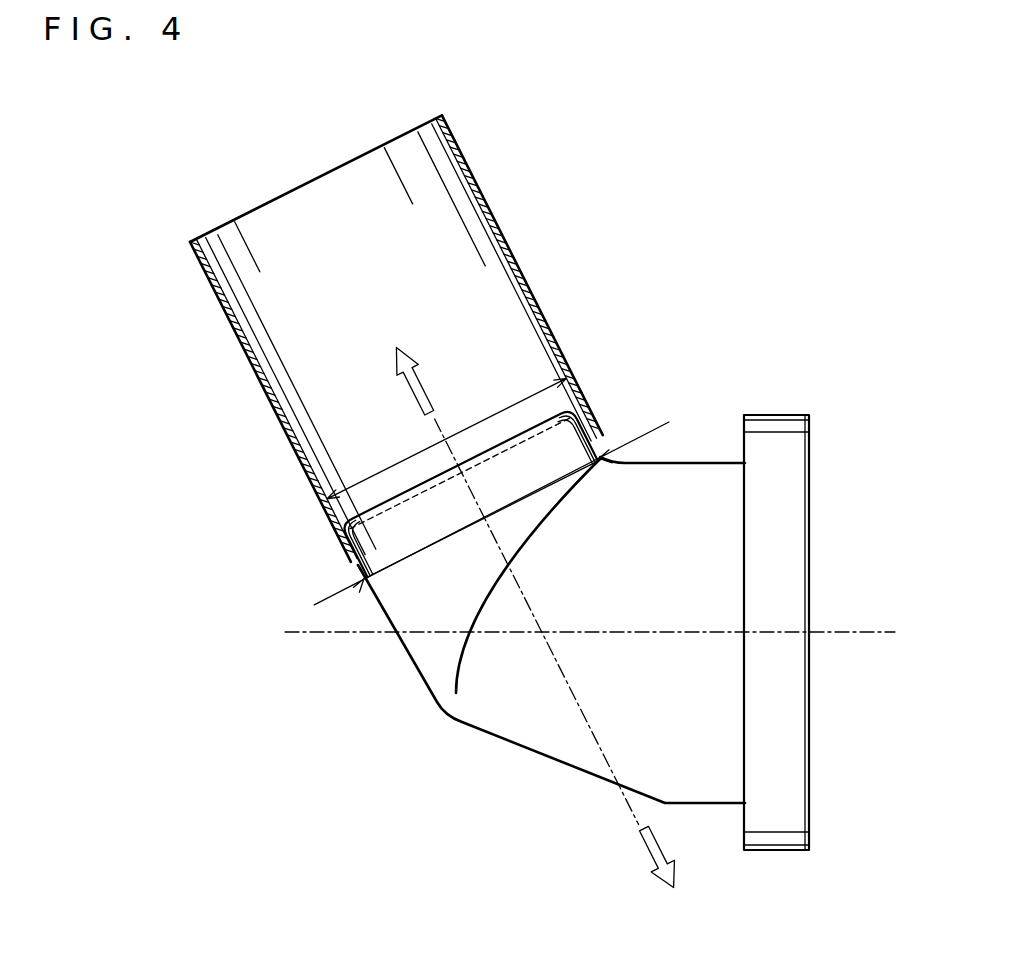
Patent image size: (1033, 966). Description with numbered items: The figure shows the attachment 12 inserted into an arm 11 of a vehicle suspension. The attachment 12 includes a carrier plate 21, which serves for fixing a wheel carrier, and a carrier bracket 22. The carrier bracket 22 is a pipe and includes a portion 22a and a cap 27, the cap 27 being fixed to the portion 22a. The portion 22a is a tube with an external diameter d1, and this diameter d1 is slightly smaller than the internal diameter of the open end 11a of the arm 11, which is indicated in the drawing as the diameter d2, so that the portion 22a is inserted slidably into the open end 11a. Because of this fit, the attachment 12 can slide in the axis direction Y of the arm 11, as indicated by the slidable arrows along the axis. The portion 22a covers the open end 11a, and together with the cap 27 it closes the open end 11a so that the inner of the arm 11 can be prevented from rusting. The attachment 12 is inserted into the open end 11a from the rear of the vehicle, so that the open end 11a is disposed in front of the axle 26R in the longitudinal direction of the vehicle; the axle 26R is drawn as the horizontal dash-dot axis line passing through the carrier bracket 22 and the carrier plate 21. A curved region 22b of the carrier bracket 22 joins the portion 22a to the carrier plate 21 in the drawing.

The arm 11 is at (492, 509).
The open end 11a is at (323, 513).
The attachment 12 is at (503, 590).
The carrier plate 21 is at (778, 415).
The carrier bracket 22 is at (467, 548).
The portion 22a is at (472, 568).
The curved portion of elbow duct 22b is at (541, 692).
The axle 26R is at (832, 630).
The cap 27 is at (403, 494).
The axis direction Y is at (536, 617).
The external diameter d1 is at (493, 516).
The inner diameter of tube d2 is at (383, 284).